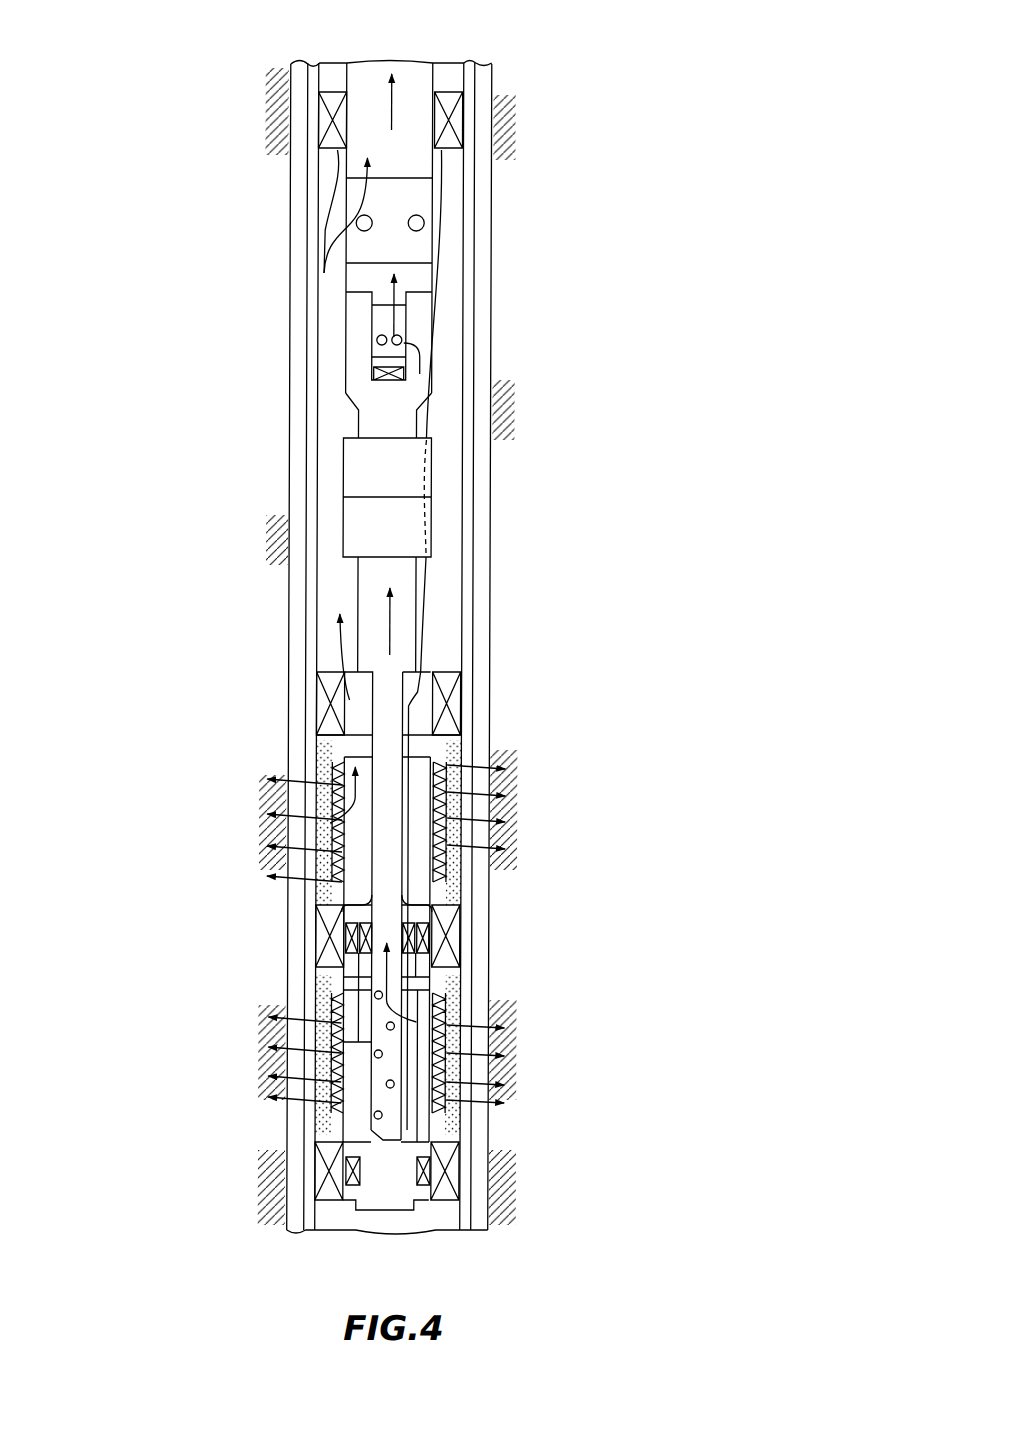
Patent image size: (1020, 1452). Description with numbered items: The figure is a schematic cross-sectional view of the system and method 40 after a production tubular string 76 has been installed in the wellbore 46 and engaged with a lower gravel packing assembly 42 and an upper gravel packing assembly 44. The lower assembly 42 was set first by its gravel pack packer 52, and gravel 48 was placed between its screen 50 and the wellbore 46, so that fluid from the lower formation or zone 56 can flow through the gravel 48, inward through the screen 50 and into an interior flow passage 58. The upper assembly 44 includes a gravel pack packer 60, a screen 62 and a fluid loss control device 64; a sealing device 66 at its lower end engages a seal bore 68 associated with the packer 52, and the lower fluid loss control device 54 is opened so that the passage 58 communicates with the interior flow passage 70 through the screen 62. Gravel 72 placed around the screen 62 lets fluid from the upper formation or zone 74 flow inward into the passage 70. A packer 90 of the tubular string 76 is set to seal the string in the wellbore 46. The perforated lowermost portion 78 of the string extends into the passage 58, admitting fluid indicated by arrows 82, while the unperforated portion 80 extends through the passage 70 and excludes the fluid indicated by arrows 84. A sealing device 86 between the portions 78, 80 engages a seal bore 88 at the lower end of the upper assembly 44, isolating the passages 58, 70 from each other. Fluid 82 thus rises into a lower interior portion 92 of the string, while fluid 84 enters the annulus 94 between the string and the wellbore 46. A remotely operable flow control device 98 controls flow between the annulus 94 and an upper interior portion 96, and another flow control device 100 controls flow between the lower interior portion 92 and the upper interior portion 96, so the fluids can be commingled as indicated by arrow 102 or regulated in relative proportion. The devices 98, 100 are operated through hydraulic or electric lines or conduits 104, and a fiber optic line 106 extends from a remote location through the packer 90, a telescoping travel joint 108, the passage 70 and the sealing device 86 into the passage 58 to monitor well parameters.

The system and method 40 is at (696, 104).
The lower gravel packing assembly 42 is at (452, 996).
The upper gravel packing assembly 44 is at (465, 759).
The wellbore 46 is at (322, 417).
The gravel 48 is at (355, 1122).
The screen 50 is at (482, 1090).
The gravel pack packer 52 is at (345, 935).
The lower fluid loss control device 54 is at (360, 968).
The formation or zone 56 is at (525, 1040).
The interior flow passage 58 is at (335, 1102).
The gravel pack packer 60 is at (322, 692).
The screen 62 is at (445, 885).
The fluid loss control device 64 is at (345, 737).
The sealing device 66 is at (420, 935).
The seal bore 68 is at (355, 912).
The interior flow passage 70 is at (362, 858).
The gravel 72 is at (452, 777).
The formation or zone 74 is at (523, 818).
The tubular string 76 is at (334, 78).
The lowermost portion 78 is at (372, 1040).
The portion 80 is at (360, 835).
The arrows 82 is at (421, 356).
The arrows 84 is at (323, 252).
The sealing device 86 is at (350, 893).
The seal bore 88 is at (420, 905).
The packer 90 is at (465, 122).
The interior portion 92 is at (403, 422).
The annulus 94 is at (330, 577).
The interior portion 96 is at (413, 78).
The remotely operable flow control device 98 is at (490, 203).
The remotely operable flow control device 100 is at (408, 318).
The arrow 102 is at (390, 118).
The lines or conduits 104 is at (343, 178).
The fiber optic line 106 is at (430, 573).
The telescoping travel joint 108 is at (345, 472).